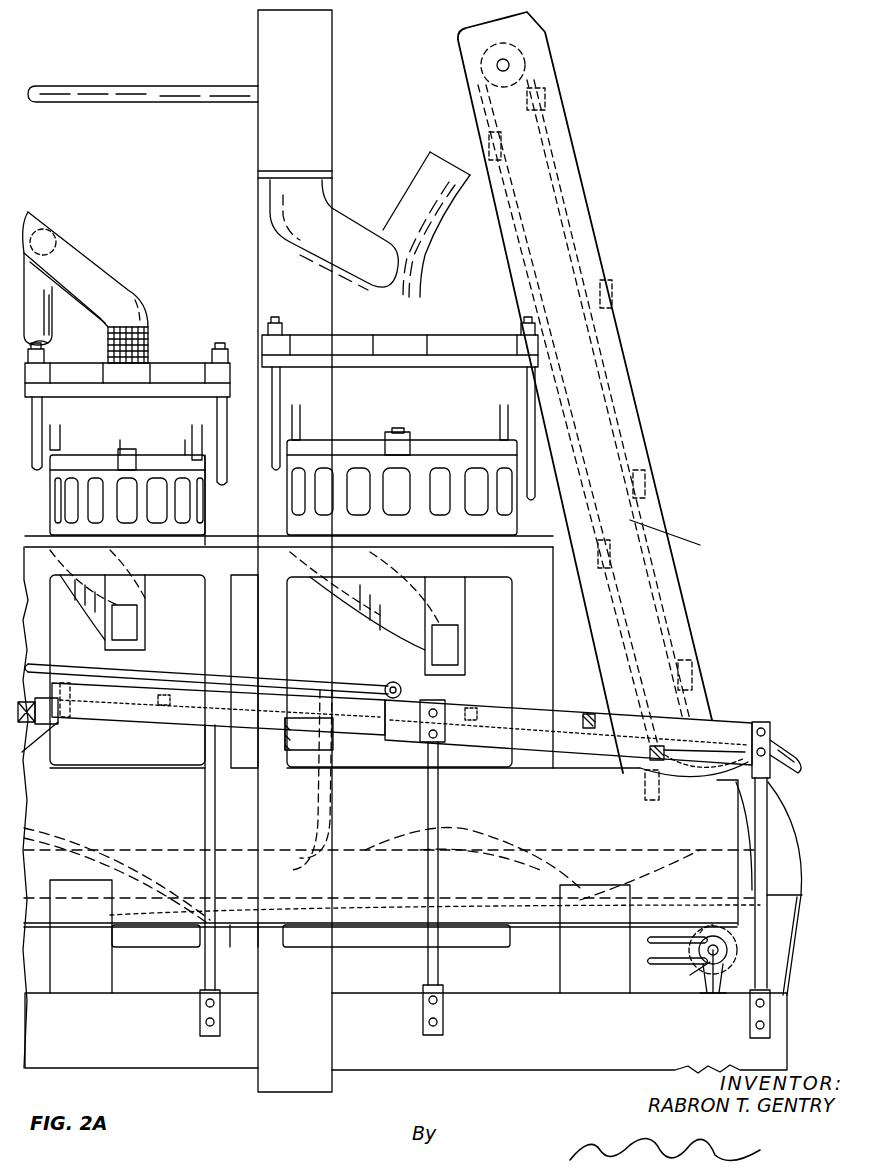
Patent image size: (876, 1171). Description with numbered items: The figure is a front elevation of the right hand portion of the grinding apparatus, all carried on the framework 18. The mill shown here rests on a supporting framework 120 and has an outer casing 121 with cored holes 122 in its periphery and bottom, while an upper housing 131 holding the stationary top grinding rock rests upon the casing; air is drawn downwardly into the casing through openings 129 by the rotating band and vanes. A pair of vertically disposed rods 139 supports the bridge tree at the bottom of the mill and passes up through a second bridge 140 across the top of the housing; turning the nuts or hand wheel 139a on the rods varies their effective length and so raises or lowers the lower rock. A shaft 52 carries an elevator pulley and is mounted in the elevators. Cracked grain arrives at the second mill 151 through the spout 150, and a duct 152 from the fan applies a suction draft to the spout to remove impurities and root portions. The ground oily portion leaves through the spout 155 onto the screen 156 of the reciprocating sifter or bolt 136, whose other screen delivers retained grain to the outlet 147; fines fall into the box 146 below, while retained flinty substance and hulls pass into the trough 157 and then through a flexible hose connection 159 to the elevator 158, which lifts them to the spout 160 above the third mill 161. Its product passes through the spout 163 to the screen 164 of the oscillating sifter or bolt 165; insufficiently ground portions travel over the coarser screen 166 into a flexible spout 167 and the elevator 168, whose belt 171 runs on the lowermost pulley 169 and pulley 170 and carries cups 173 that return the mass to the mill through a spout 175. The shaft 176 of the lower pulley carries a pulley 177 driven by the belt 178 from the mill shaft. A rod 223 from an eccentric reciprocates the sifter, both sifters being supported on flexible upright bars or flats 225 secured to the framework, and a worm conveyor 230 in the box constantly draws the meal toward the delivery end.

The framework 18 is at (388, 1060).
The shaft 52 is at (114, 92).
The supporting framework 120 is at (553, 665).
The outer casing 121 is at (285, 525).
The cored holes 122 is at (285, 500).
The openings 129 is at (56, 418).
The upper housing 131 is at (283, 461).
The reciprocating sifter or bolt 136 is at (160, 728).
The vertically disposed rods 139 is at (62, 456).
The nuts or hand wheel 139a is at (46, 358).
The second bridge 140 is at (118, 388).
The box 146 is at (380, 882).
The outlet 147 is at (52, 732).
The spout 150 is at (66, 244).
The second mill 151 is at (314, 428).
The duct 152 is at (52, 322).
The spout 155 is at (145, 600).
The screen 156 is at (130, 700).
The trough 157 is at (334, 738).
The elevator 158 is at (281, 551).
The flexible hose connection 159 is at (324, 790).
The spout 160 is at (348, 228).
The third mill 161 is at (458, 378).
The spout 163 is at (462, 606).
The screen 164 is at (495, 732).
The oscillating or reciprocating sifter or bolt 165 is at (533, 718).
The screen 166 is at (735, 730).
The flexible spout 167 is at (778, 822).
The elevator 168 is at (668, 548).
The lowermost pulley 169 is at (713, 936).
The pulley 170 is at (506, 84).
The belt 171 is at (560, 194).
The cups 173 is at (602, 284).
The spout 175 is at (432, 228).
The shaft 176 is at (720, 966).
The pulley 177 is at (701, 971).
The belt 178 is at (668, 972).
The rod 223 is at (192, 668).
The flexible upright bars or flats 225 is at (205, 798).
The worm conveyor 230 is at (166, 842).